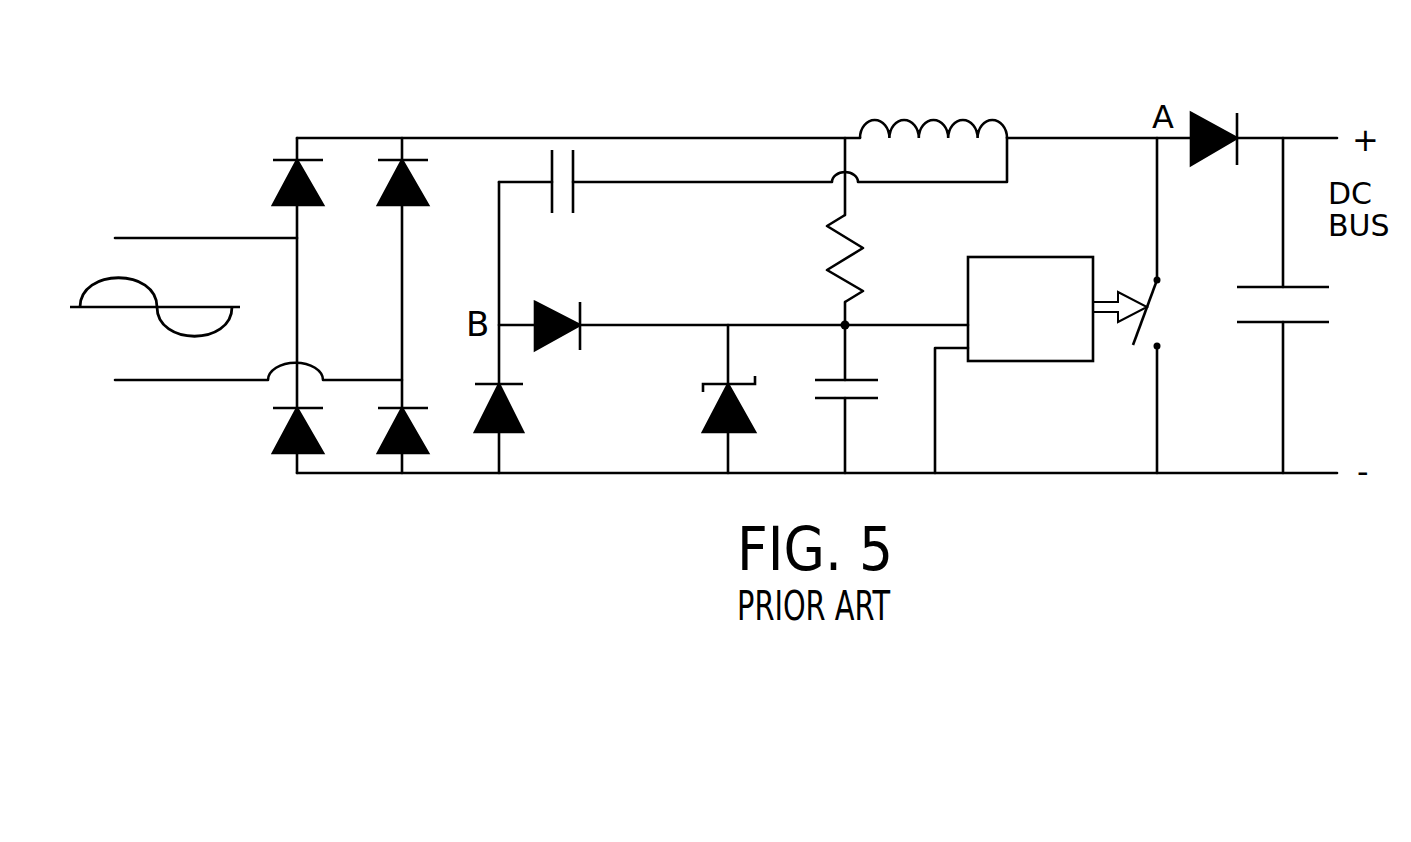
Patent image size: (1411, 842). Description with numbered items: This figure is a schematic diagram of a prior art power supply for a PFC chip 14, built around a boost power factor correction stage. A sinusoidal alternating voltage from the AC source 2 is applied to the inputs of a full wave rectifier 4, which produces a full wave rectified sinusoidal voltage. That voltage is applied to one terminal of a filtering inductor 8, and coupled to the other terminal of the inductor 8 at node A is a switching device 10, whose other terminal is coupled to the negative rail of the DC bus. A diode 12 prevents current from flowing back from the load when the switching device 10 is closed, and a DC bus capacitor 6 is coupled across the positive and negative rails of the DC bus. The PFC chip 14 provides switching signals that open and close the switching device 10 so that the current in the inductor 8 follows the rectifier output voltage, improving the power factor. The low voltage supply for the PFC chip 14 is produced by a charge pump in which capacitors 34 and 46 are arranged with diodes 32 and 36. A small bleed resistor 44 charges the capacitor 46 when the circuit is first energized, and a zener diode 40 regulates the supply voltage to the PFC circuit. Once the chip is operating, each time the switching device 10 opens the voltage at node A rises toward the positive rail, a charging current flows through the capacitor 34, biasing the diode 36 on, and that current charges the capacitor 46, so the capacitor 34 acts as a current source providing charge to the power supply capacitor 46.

The AC input source 2 is at (75, 258).
The full wave rectifier 4 is at (352, 500).
The DC bus capacitor 6 is at (1245, 313).
The filtering inductor 8 is at (920, 117).
The switching device 10 is at (1159, 317).
The diode 12 is at (1220, 108).
The PFC chip 14 is at (980, 257).
The diode 32 is at (473, 408).
The capacitor 34 is at (562, 205).
The diode 36 is at (558, 303).
The zener diode 40 is at (703, 413).
The bleed resistor 44 is at (873, 270).
The capacitor 46 is at (817, 393).